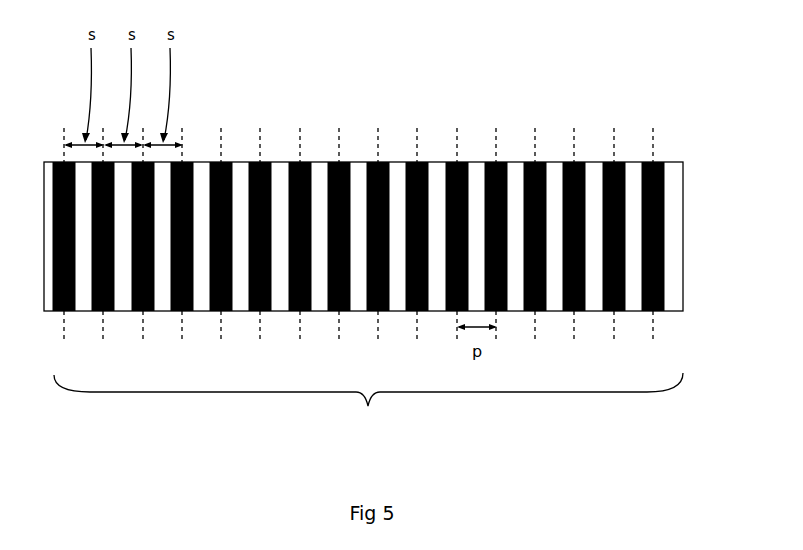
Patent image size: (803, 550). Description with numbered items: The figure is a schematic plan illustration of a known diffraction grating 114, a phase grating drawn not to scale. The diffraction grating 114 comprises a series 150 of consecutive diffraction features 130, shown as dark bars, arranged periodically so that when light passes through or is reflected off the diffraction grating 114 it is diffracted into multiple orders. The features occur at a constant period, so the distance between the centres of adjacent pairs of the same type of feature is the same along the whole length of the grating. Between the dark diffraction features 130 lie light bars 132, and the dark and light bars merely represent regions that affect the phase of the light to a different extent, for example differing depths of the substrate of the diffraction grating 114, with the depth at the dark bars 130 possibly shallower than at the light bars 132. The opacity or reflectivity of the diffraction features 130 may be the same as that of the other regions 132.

The diffraction grating 114 is at (623, 110).
The diffraction features 130 is at (271, 157).
The light bars 132 is at (319, 164).
The series of consecutive diffraction features 150 is at (368, 407).